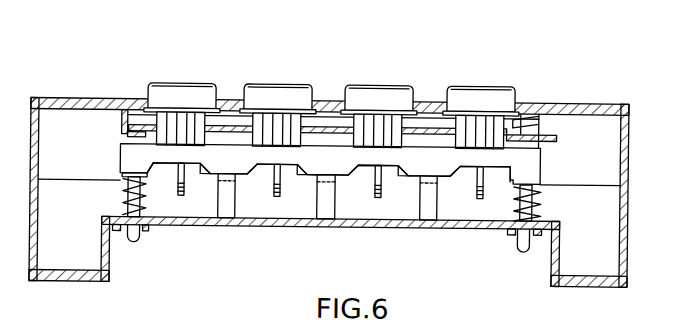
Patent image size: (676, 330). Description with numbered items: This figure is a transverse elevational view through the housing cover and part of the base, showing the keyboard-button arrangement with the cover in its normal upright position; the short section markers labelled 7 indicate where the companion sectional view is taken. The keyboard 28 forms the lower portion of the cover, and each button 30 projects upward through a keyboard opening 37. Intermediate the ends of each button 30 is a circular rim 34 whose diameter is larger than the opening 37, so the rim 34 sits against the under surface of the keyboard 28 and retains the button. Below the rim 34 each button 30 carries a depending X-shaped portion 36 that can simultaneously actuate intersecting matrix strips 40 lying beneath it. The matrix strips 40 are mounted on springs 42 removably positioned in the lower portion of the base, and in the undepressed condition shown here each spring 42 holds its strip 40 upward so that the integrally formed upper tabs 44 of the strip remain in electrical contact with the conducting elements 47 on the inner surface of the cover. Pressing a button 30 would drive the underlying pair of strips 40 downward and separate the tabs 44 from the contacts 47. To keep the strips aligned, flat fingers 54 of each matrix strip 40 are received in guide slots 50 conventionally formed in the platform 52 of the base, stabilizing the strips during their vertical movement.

The section line 7- 7 is at (175, 27).
The keyboard 28 is at (436, 101).
The button 30 is at (406, 101).
The circular rim 34 is at (487, 111).
The X-shaped portion 36 is at (538, 112).
The keyboard opening 37 is at (343, 101).
The matrix strip 40 is at (312, 162).
The spring 42 is at (142, 196).
The upper tab 44 is at (534, 152).
The electrical contact 47 is at (128, 137).
The guide slot 50 is at (520, 239).
The platform 52 is at (424, 228).
The flat finger 54 is at (524, 247).